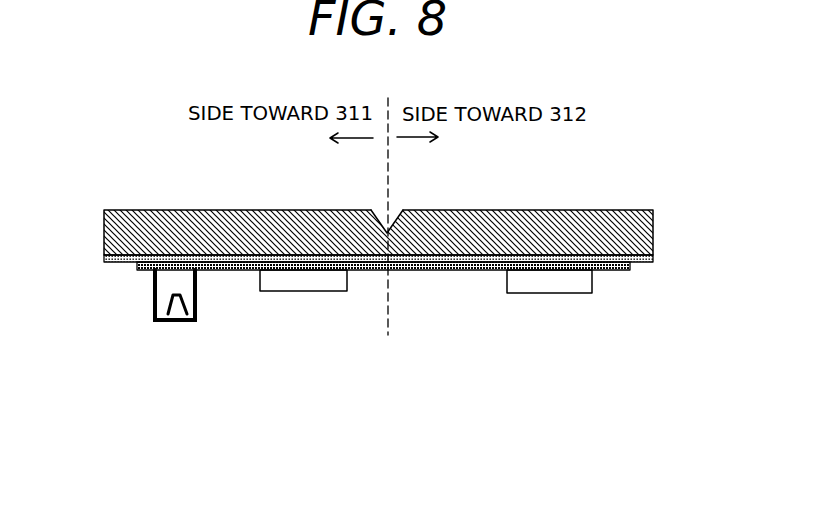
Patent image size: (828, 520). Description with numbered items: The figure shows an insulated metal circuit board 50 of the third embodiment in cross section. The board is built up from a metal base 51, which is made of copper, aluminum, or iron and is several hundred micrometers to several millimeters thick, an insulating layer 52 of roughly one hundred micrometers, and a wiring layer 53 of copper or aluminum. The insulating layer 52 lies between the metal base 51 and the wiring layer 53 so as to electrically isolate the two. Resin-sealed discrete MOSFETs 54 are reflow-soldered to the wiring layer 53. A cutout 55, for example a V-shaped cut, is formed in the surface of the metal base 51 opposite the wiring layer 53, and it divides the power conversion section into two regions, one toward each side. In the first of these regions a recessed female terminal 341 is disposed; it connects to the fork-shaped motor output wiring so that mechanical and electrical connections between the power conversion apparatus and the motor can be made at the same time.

The insulated metal circuit board 50 is at (122, 182).
The metal base 51 is at (604, 220).
The insulating layer 52 is at (645, 262).
The wiring layer 53 is at (450, 270).
The MOSFET 54 is at (312, 292).
The cutout 55 is at (381, 209).
The female terminal 341 is at (197, 322).